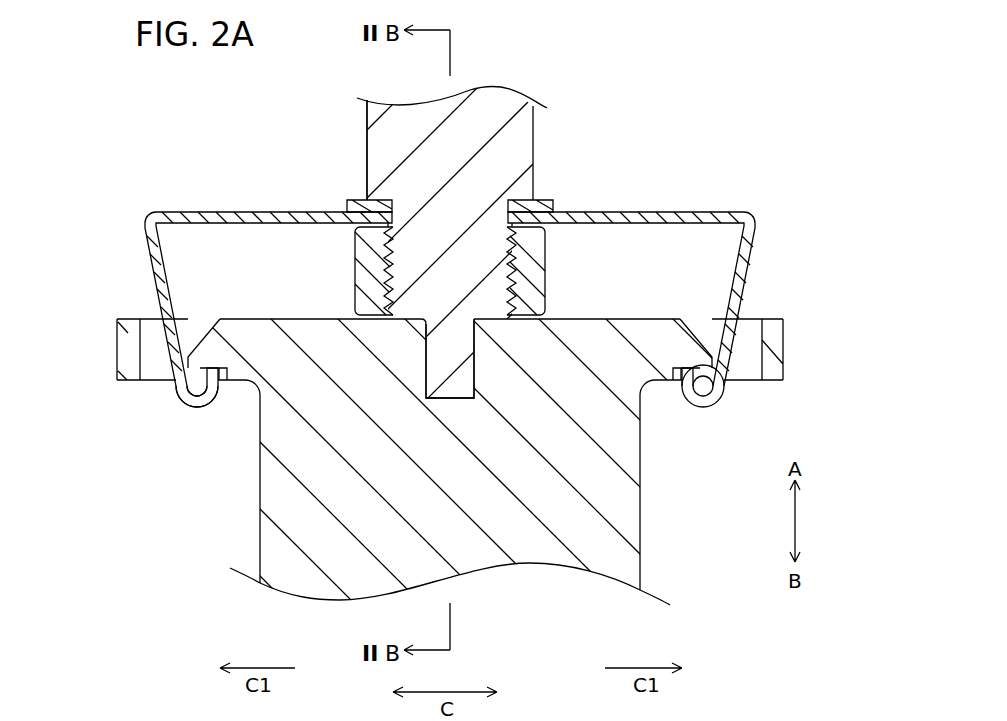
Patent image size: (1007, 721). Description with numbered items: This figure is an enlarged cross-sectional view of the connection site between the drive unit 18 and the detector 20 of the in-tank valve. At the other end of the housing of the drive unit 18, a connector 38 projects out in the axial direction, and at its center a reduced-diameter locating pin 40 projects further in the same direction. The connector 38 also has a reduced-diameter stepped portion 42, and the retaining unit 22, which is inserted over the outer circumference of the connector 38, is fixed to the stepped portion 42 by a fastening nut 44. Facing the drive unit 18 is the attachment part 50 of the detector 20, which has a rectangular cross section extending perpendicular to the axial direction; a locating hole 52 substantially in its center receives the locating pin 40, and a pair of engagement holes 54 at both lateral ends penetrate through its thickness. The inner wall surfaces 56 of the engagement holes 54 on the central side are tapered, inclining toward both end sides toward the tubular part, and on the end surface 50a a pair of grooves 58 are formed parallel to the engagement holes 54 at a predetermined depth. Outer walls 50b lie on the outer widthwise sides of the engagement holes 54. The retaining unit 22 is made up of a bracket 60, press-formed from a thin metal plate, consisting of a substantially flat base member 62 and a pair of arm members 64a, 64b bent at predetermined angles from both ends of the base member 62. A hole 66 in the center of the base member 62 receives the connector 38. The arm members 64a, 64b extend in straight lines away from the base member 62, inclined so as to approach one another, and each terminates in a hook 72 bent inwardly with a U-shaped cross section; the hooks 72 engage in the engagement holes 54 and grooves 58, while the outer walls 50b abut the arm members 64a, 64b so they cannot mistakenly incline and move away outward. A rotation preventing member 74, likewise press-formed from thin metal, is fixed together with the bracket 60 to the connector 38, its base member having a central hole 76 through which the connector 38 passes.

The drive unit 18 is at (411, 250).
The detector 20 is at (487, 445).
The retaining unit 22 is at (449, 302).
The connector 38 is at (382, 142).
The locating pin 40 is at (451, 397).
The stepped portion 42 is at (362, 206).
The fastening nut 44 is at (545, 259).
The attachment part 50 is at (562, 326).
The end surface 50a is at (774, 383).
The outer walls 50b is at (128, 347).
The locating hole 52 is at (428, 352).
The engagement holes 54 is at (157, 370).
The inner wall surfaces 56 is at (205, 341).
The grooves 58 is at (212, 368).
The bracket 60 is at (449, 306).
The base member 62 is at (302, 218).
The arm member 64a is at (153, 254).
The arm member 64b is at (747, 254).
The hole 66 is at (393, 219).
The hooks 72 is at (199, 408).
The rotation preventing member 74 is at (570, 204).
The hole 76 is at (508, 218).